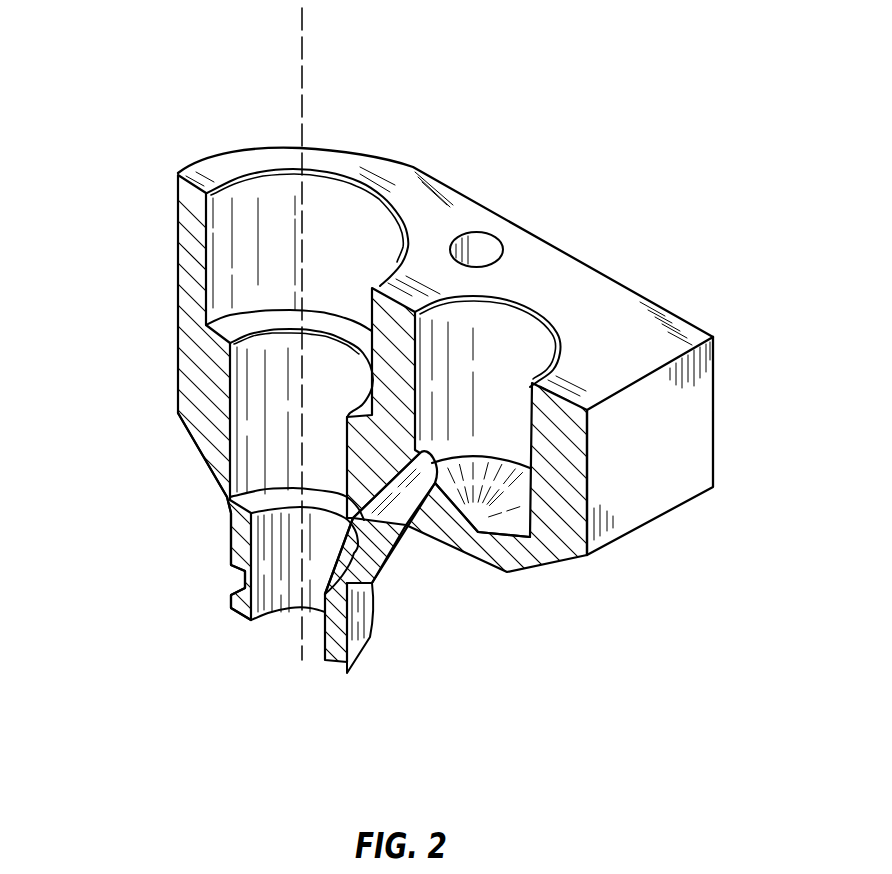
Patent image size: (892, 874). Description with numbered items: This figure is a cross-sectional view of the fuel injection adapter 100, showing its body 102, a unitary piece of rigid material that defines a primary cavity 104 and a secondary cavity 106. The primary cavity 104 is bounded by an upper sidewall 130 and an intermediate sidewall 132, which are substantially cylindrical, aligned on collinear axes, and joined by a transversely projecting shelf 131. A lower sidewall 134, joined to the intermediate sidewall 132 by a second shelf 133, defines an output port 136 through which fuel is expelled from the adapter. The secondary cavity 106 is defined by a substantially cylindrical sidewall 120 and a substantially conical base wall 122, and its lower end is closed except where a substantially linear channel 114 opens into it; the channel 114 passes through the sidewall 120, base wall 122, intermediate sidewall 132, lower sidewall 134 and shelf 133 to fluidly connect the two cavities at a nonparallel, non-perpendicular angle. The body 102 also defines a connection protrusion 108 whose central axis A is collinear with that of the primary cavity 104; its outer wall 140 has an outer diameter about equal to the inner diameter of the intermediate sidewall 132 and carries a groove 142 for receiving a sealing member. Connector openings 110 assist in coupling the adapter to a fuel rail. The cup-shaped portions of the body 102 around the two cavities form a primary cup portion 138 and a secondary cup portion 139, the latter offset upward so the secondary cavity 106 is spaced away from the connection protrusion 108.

The fuel injection adapter 100 is at (652, 175).
The body 102 is at (678, 427).
The primary cavity 104 is at (277, 198).
The secondary cavity 106 is at (508, 326).
The connection protrusion 108 is at (208, 561).
The connector openings 110 is at (483, 236).
The channel 114 is at (384, 510).
The sidewall 120 is at (540, 352).
The base wall 122 is at (510, 509).
The upper sidewall 130 is at (395, 238).
The shelf 131 is at (230, 330).
The intermediate sidewall 132 is at (252, 473).
The shelf 133 is at (232, 494).
The lower sidewall 134 is at (281, 600).
The output port 136 is at (298, 632).
The primary cup portion 138 is at (199, 174).
The secondary cup portion 139 is at (577, 357).
The outer wall 140 is at (360, 600).
The groove 142 is at (374, 644).
The central axis A is at (305, 59).